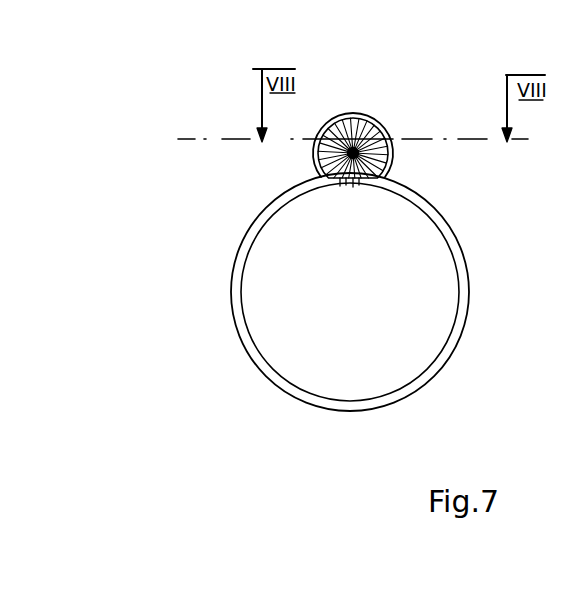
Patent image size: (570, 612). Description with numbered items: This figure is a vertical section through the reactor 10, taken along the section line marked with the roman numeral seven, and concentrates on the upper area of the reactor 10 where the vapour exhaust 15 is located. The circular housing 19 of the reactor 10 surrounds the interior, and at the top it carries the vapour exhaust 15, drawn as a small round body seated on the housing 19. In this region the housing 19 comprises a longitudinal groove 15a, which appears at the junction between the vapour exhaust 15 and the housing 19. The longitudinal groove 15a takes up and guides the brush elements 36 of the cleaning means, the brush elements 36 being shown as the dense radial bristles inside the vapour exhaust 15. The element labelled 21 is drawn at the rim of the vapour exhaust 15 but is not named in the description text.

The reactor 10 is at (471, 290).
The housing 19 is at (450, 215).
The vapour exhaust 15 is at (304, 157).
The longitudinal groove 15a is at (380, 183).
The roller rim 21 is at (367, 113).
The brush elements 36 is at (371, 129).